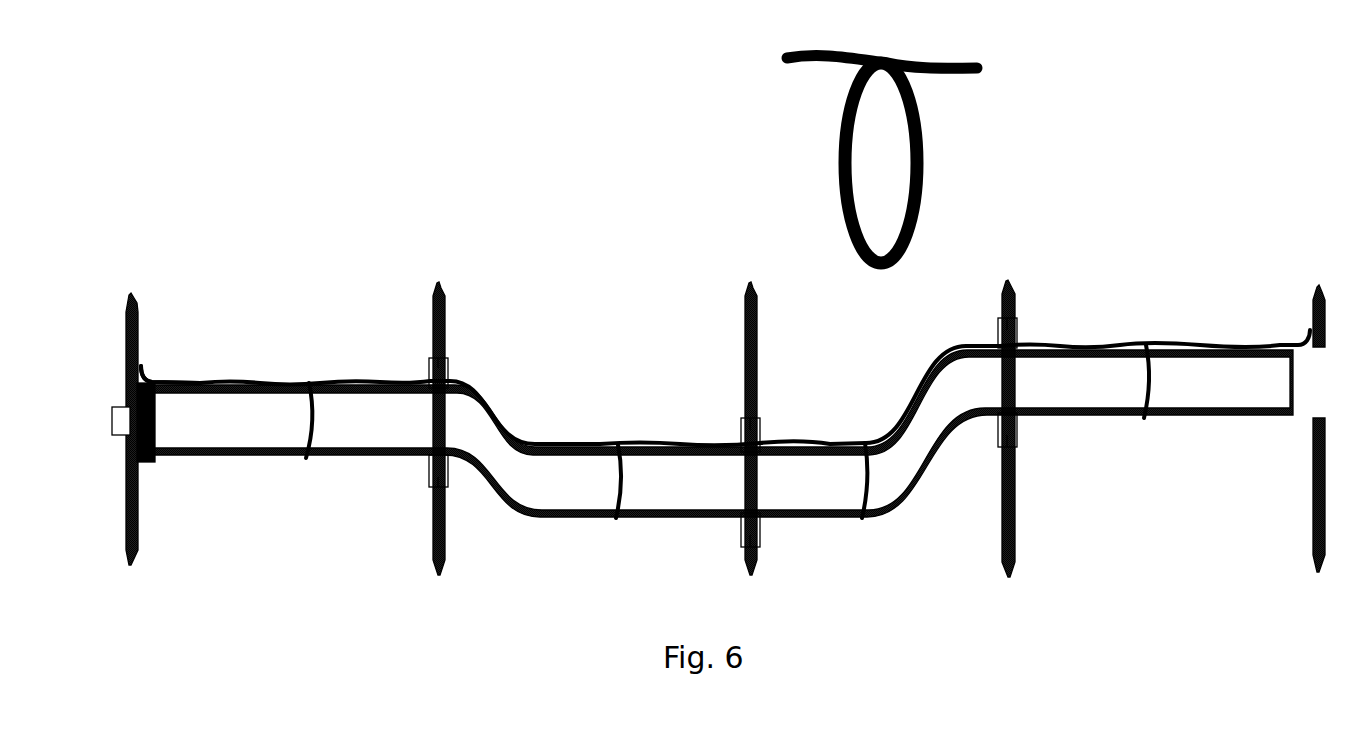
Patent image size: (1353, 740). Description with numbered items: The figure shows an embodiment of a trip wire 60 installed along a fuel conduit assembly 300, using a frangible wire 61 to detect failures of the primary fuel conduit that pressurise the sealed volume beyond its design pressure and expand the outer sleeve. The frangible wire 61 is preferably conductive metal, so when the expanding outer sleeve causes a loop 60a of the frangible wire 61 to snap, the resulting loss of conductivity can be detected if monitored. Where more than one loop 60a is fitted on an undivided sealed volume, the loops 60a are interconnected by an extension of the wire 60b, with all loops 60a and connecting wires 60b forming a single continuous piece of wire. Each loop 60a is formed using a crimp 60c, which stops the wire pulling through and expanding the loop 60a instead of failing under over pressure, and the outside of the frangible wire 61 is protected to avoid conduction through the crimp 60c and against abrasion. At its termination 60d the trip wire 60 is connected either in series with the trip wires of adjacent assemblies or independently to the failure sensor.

The pipe assembly 300 is at (1093, 308).
The trip wire 60 is at (658, 248).
The loop 60a is at (307, 423).
The connecting wire 60b is at (463, 380).
The crimp 60c is at (855, 65).
The termination 60d is at (141, 366).
The frangible wire 61 is at (930, 352).